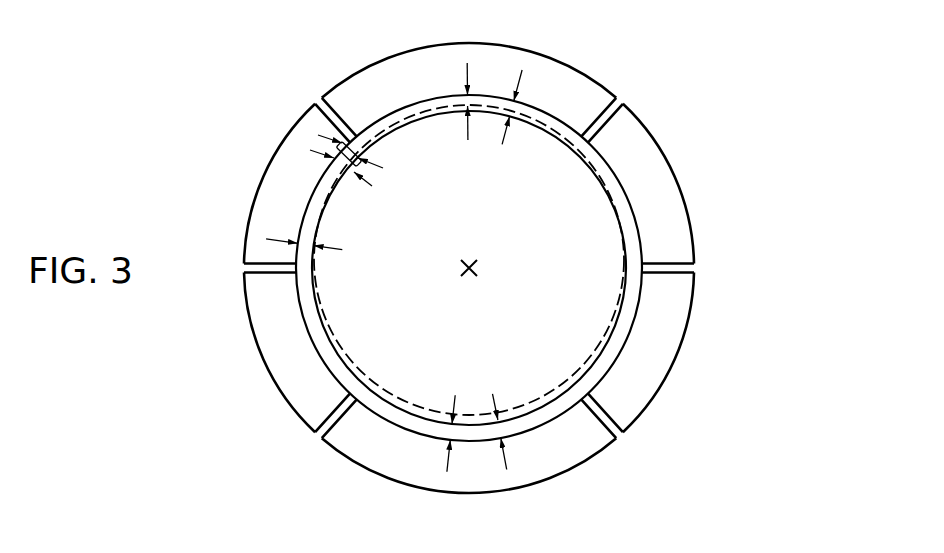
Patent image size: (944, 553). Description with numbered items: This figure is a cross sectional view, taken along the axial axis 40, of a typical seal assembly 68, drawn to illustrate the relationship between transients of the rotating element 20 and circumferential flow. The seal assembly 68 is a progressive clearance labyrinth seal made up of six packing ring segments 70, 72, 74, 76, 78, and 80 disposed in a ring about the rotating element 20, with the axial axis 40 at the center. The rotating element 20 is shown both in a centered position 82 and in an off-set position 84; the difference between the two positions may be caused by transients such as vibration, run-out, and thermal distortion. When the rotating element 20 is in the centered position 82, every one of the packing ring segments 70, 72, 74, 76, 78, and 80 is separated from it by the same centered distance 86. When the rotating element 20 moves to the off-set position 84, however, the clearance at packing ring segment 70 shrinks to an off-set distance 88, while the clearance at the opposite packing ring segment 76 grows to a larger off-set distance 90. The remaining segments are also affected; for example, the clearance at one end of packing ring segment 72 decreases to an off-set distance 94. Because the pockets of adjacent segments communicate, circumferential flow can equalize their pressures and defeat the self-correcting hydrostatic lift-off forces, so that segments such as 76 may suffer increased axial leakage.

The rotating element 20 is at (529, 268).
The axial axis 40 is at (462, 271).
The seal assembly 68 is at (742, 52).
The packing ring segment 70 is at (570, 64).
The packing ring segment 72 is at (270, 166).
The packing ring segment 74 is at (268, 373).
The packing ring segment 76 is at (538, 484).
The packing ring segment 78 is at (670, 370).
The packing ring segment 80 is at (668, 163).
The centered position 82 is at (425, 118).
The off-set position 84 is at (405, 400).
The centered distance 86 is at (515, 123).
The off-set distance 88 is at (470, 103).
The off-set distance 90 is at (500, 418).
The off-set distance 94 is at (360, 159).